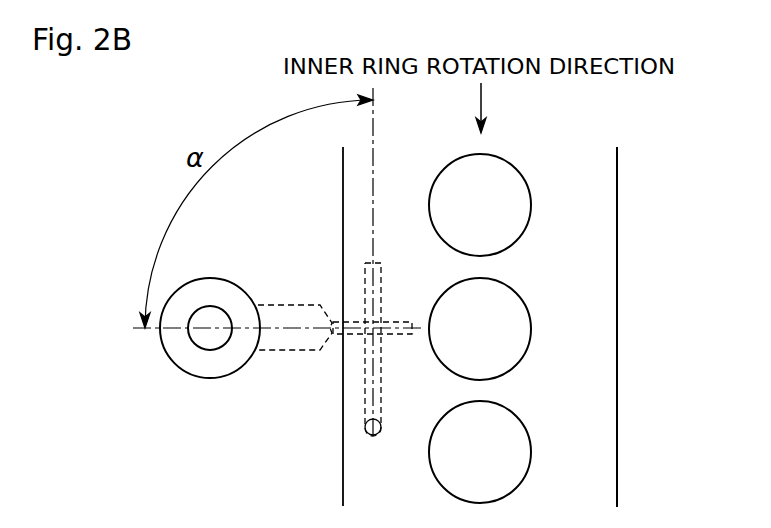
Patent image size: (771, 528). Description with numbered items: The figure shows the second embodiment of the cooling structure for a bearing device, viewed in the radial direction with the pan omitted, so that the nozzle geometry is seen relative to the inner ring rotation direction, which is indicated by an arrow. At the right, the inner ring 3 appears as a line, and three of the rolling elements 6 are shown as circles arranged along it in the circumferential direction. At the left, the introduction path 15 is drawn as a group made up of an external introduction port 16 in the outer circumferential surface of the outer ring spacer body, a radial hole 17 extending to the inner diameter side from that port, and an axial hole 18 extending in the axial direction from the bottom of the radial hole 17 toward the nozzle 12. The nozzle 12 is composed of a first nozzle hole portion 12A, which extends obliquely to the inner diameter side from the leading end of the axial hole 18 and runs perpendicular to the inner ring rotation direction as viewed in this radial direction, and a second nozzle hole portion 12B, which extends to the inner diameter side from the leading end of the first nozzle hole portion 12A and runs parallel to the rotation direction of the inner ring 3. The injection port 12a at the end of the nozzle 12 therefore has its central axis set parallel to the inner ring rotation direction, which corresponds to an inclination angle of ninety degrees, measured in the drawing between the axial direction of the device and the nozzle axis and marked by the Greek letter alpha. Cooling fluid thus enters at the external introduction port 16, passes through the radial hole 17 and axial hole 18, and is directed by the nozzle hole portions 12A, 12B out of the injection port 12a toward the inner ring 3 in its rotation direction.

The inner ring 3 is at (602, 330).
The rolling elements 6 is at (508, 315).
The nozzle 12 is at (312, 386).
The first nozzle hole portion 12A is at (365, 335).
The second nozzle hole portion 12B is at (368, 410).
The injection port 12a is at (375, 436).
The introduction path 15 is at (199, 359).
The external introduction ports 16 is at (170, 350).
The radial holes 17 is at (208, 352).
The axial holes 18 is at (272, 350).